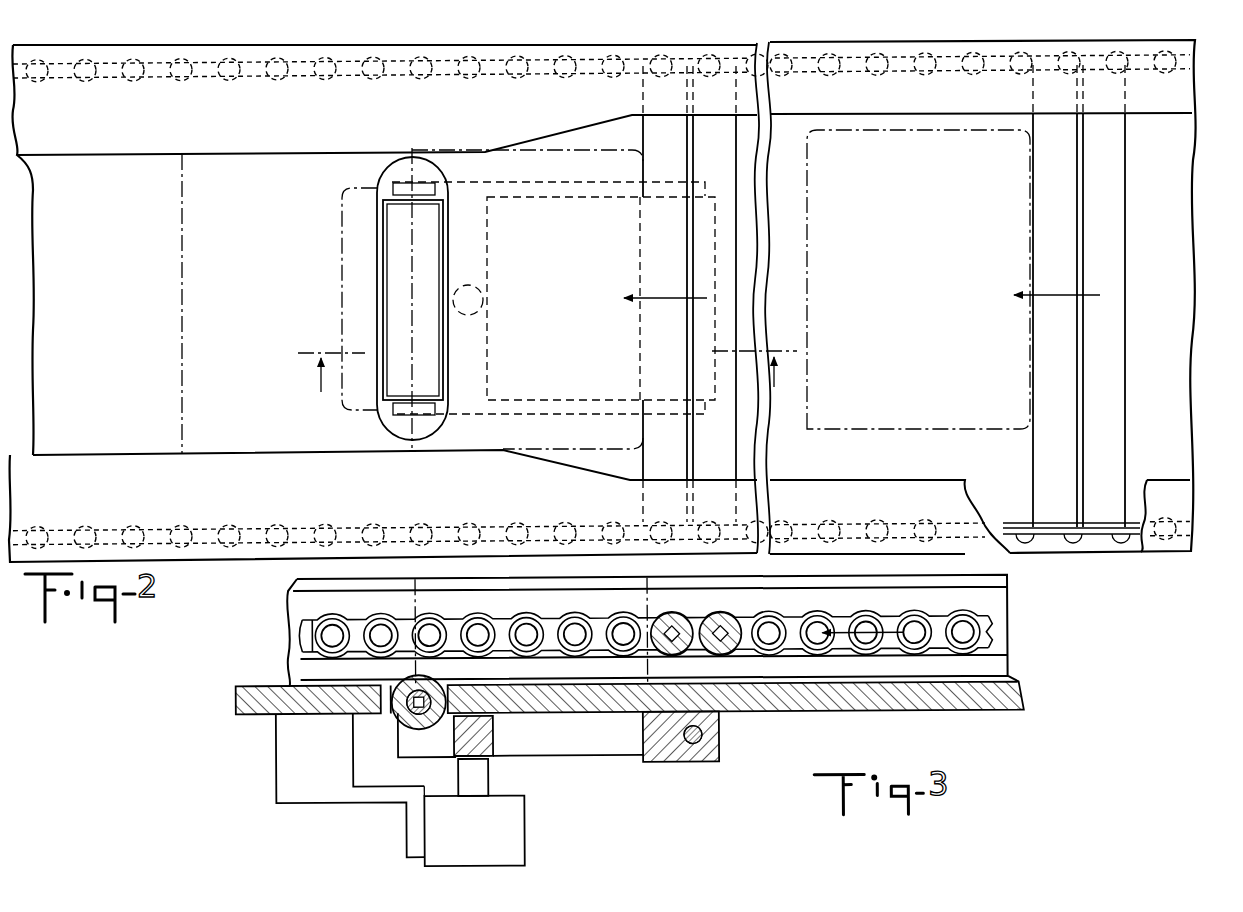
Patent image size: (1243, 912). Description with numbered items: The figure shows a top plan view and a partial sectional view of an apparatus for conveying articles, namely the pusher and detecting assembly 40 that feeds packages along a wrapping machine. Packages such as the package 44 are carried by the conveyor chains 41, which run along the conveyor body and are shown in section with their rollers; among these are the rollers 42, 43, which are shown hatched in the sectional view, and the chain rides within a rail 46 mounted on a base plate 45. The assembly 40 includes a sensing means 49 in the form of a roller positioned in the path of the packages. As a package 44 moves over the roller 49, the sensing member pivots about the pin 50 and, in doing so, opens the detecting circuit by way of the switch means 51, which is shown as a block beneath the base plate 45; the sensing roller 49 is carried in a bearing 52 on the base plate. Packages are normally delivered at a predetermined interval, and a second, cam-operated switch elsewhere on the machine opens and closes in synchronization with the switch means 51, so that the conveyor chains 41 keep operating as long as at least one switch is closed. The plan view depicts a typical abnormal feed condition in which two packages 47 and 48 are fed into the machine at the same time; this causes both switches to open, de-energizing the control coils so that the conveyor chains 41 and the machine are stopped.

In FIG. 2, the pusher and detecting assembly 40 is at (1101, 564).
In FIG. 2, the conveyor chains 41 is at (1025, 527).
In FIG. 3, the conveyor chains 41 is at (933, 613).
In FIG. 2, the roller 42 is at (662, 339).
In FIG. 3, the roller 42 is at (665, 614).
In FIG. 2, the roller 43 is at (725, 335).
In FIG. 3, the roller 43 is at (721, 614).
In FIG. 2, the package 44 is at (929, 339).
In FIG. 3, the package 44 is at (534, 612).
In FIG. 2, the base plate 45 is at (104, 356).
In FIG. 3, the base plate 45 is at (958, 705).
In FIG. 3, the guide rail 46 is at (992, 668).
In FIG. 2, the package 47 is at (556, 318).
In FIG. 2, the package 48 is at (258, 331).
In FIG. 2, the sensing means 49 is at (390, 298).
In FIG. 3, the sensing means 49 is at (395, 725).
In FIG. 3, the pin 50 is at (720, 740).
In FIG. 3, the switch means 51 is at (503, 818).
In FIG. 3, the bearing 52 is at (442, 680).